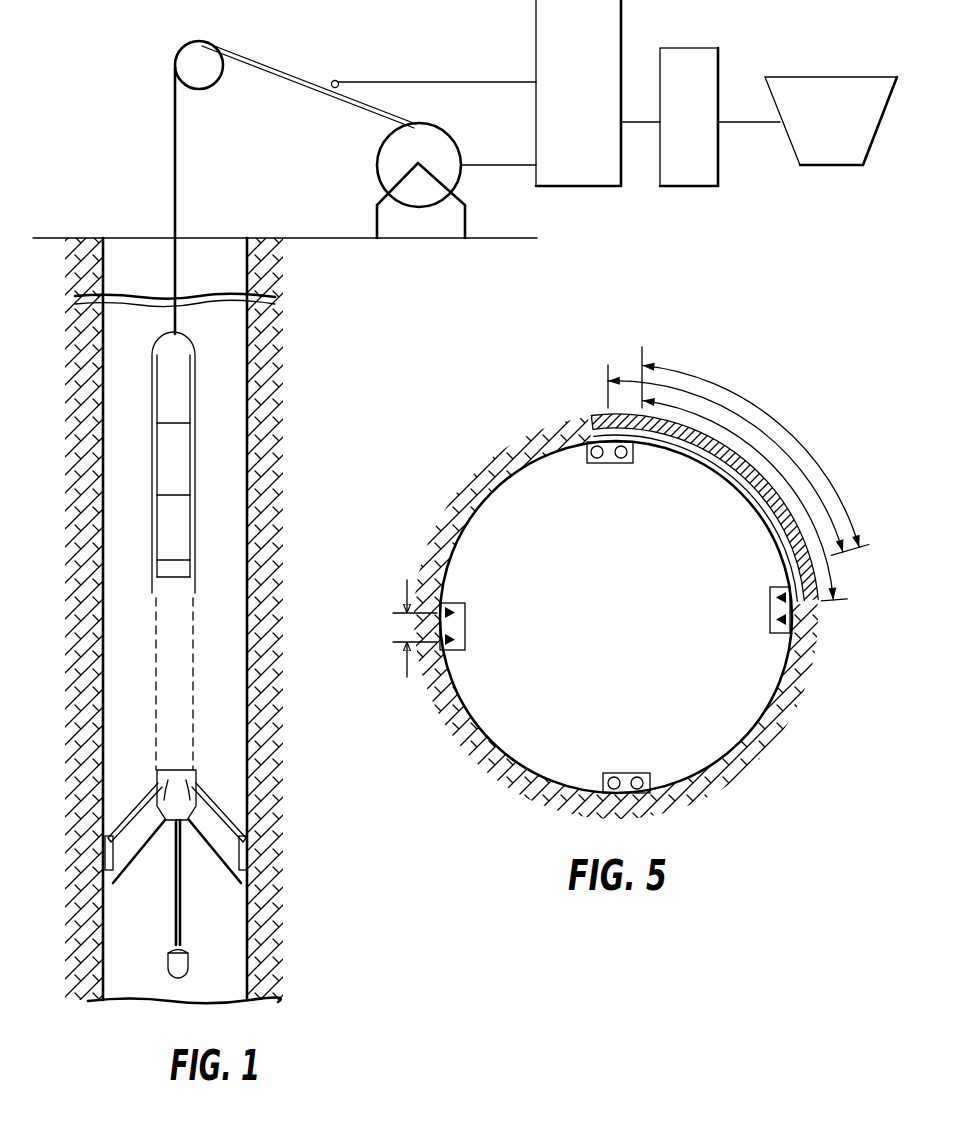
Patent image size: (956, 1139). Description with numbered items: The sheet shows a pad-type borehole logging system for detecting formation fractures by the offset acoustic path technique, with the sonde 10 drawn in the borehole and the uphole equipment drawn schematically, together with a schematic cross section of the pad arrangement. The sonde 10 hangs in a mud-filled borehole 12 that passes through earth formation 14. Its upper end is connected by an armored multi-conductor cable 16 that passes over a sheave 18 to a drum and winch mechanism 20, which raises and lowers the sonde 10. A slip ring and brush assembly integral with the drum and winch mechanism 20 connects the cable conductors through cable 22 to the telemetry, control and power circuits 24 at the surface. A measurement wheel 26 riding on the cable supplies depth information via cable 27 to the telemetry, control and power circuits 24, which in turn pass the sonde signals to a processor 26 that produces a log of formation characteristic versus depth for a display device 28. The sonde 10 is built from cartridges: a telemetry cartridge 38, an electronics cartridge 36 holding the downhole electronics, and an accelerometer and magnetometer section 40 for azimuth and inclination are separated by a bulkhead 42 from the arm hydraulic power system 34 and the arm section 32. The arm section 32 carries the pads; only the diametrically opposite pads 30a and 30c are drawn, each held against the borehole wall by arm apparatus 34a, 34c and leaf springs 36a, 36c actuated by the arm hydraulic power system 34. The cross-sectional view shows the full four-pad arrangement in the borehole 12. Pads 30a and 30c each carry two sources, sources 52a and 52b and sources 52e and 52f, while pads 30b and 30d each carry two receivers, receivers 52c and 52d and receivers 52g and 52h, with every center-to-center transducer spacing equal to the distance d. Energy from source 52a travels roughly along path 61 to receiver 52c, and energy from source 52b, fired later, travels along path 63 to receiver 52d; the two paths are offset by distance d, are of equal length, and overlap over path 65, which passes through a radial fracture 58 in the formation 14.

In FIG. 1, the sonde 10 is at (149, 350).
In FIG. 1, the borehole 12 is at (144, 278).
In FIG. 5, the borehole 12 is at (623, 630).
In FIG. 1, the earth formation 14 is at (54, 290).
In FIG. 1, the armored multi-conductor cable 16 is at (173, 197).
In FIG. 1, the sheave 18 is at (187, 41).
In FIG. 1, the drum and winch mechanism 20 is at (400, 200).
In FIG. 1, the cable 22 is at (492, 165).
In FIG. 1, the telemetry, control and power circuits 24 is at (558, 190).
In FIG. 1, the measurement wheel / processor 26 is at (337, 80).
In FIG. 1, the cable 27 is at (450, 82).
In FIG. 1, the display device 28 is at (815, 168).
In FIG. 1, the pad 30a is at (105, 862).
In FIG. 5, the pad 30a is at (602, 467).
In FIG. 5, the pad 30b is at (768, 612).
In FIG. 1, the pad 30c is at (247, 862).
In FIG. 5, the pad 30c is at (632, 770).
In FIG. 5, the pad 30d is at (468, 618).
In FIG. 1, the arm section 32 is at (186, 775).
In FIG. 1, the arm hydraulic power system 34 is at (194, 680).
In FIG. 1, the arm apparatus 34a is at (155, 788).
In FIG. 1, the arm apparatus 34c is at (200, 789).
In FIG. 1, the electronics cartridge 36 is at (176, 460).
In FIG. 1, the leaf springs 36a is at (137, 823).
In FIG. 1, the leaf springs 36c is at (216, 820).
In FIG. 1, the telemetry cartridge 38 is at (178, 396).
In FIG. 1, the accelerometer and magnetometer section 40 is at (176, 534).
In FIG. 1, the bulkhead 42 is at (178, 570).
In FIG. 5, the source 52a is at (591, 465).
In FIG. 5, the source 52b is at (628, 465).
In FIG. 5, the receiver 52c is at (770, 597).
In FIG. 5, the receiver 52d is at (770, 630).
In FIG. 5, the source 52e is at (647, 772).
In FIG. 5, the source 52f is at (606, 772).
In FIG. 5, the receiver 52g is at (467, 642).
In FIG. 5, the receiver 52h is at (468, 604).
In FIG. 5, the radial fracture 58 is at (732, 481).
In FIG. 5, the offset acoustic path 61 is at (822, 460).
In FIG. 5, the offset acoustic path 63 is at (812, 517).
In FIG. 5, the overlap path 65 is at (783, 420).
In FIG. 5, the center-to-center transducer spacing d is at (415, 628).